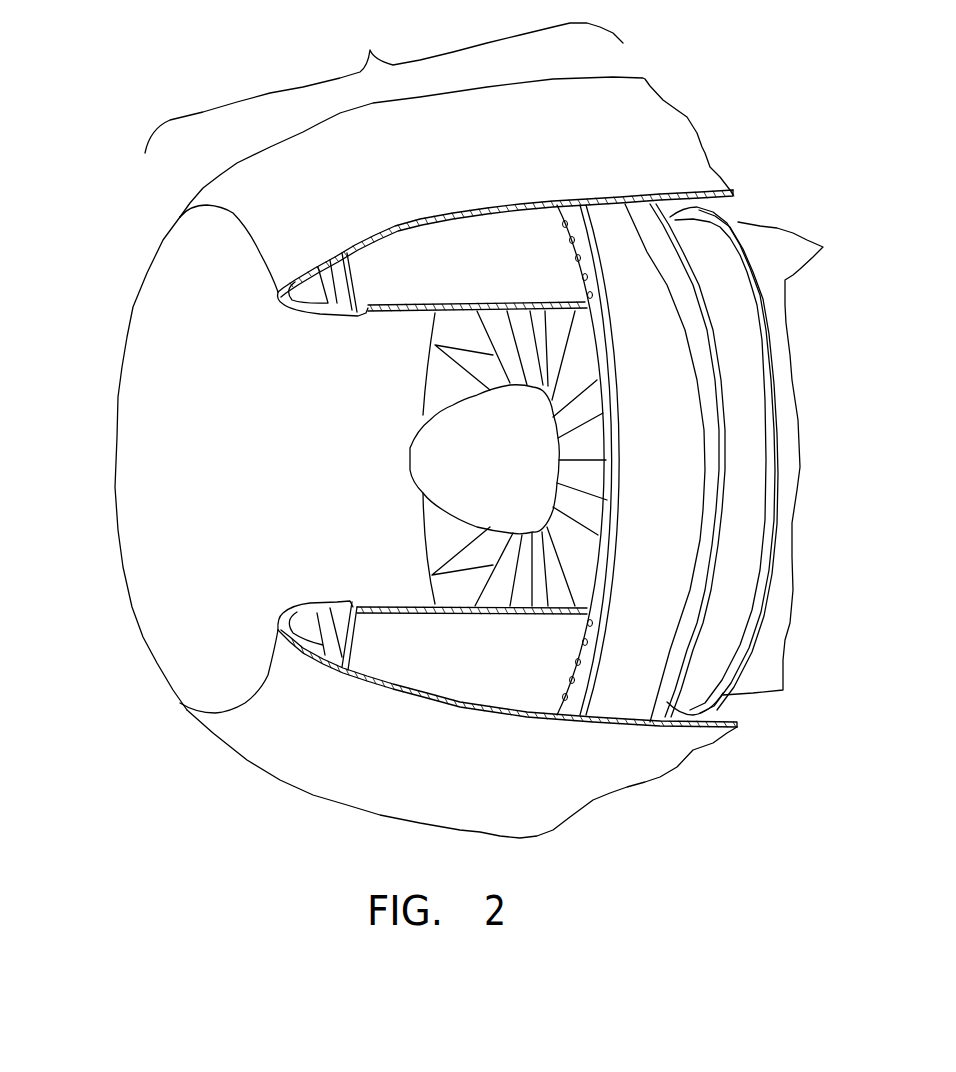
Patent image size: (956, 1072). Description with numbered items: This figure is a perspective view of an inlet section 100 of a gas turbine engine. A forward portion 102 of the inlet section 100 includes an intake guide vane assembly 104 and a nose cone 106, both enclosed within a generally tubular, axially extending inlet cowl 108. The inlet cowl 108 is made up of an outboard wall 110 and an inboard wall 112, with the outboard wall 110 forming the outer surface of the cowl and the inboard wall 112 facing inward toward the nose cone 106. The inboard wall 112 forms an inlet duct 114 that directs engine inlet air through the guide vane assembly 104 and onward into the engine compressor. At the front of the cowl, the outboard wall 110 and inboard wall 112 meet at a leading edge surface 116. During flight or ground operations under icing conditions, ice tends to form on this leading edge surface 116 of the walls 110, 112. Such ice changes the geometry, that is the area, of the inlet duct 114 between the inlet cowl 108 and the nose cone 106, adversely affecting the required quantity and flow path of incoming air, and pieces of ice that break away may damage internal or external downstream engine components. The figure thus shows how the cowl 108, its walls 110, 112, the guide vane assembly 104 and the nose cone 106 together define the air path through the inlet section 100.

The inlet section 100 is at (123, 86).
The forward portion 102 is at (370, 50).
The intake guide vane assembly 104 is at (438, 372).
The nose cone 106 is at (430, 460).
The inlet cowl 108 is at (495, 164).
The outboard wall 110 is at (333, 777).
The inboard wall 112 is at (400, 594).
The inlet duct 114 is at (272, 573).
The leading edge surface 116 is at (277, 627).